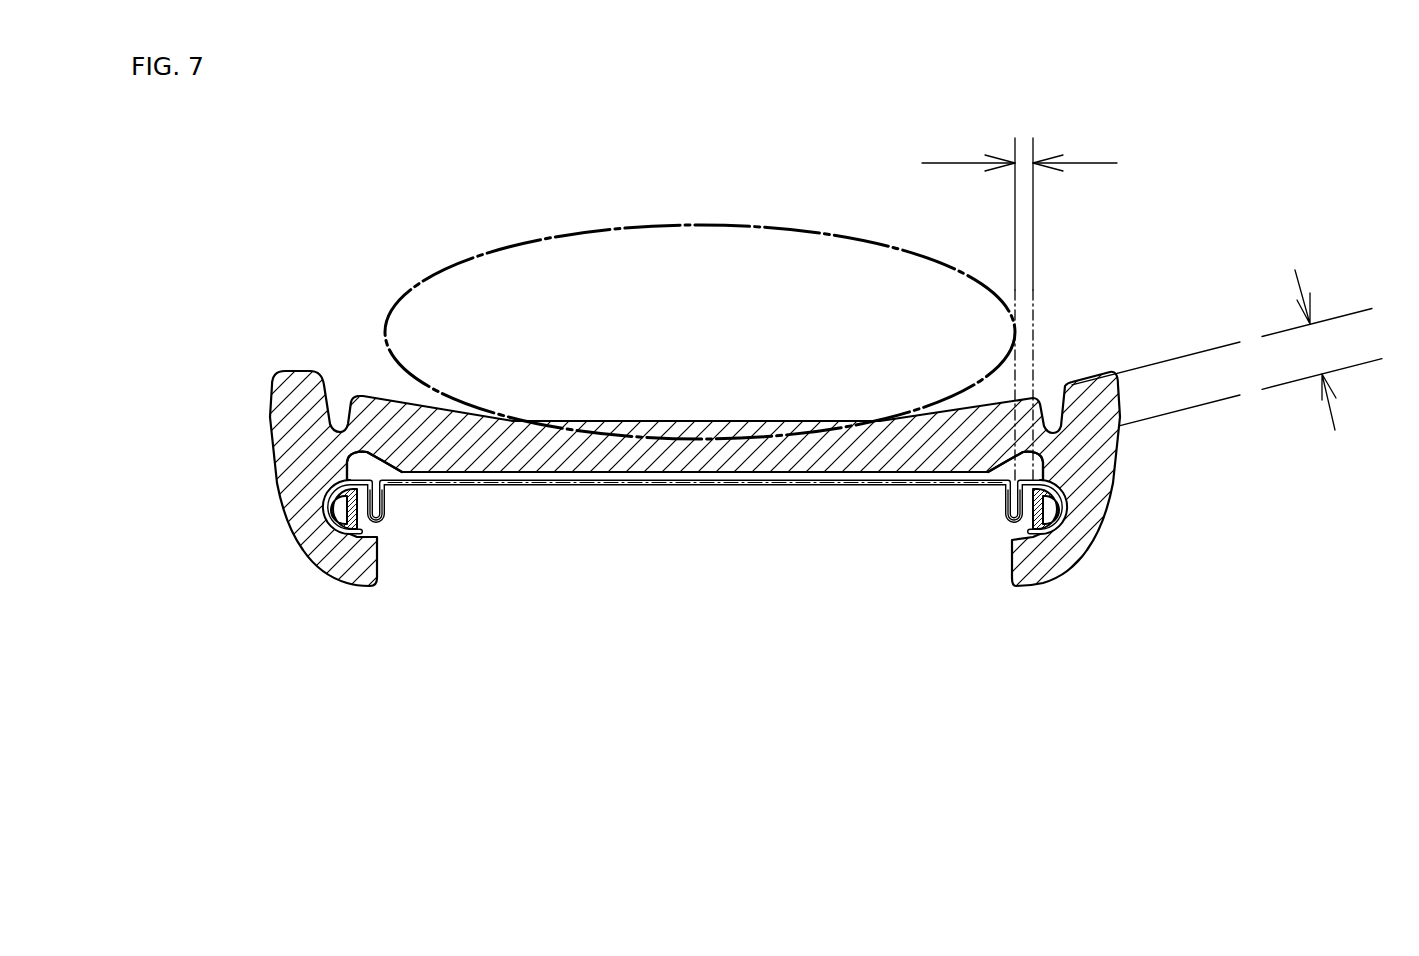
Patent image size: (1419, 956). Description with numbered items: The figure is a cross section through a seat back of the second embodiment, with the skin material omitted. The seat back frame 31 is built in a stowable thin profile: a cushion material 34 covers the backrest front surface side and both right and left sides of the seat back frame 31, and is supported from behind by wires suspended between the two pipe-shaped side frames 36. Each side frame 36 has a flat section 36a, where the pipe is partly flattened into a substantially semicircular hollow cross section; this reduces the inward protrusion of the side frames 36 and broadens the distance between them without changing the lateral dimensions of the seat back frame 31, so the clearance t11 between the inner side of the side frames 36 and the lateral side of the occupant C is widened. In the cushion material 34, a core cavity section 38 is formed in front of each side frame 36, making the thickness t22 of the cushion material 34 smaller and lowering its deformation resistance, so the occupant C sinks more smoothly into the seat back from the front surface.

The cushion material 34 is at (1080, 380).
The core cavity section 38 is at (337, 463).
The seat back frame 31 is at (715, 489).
The side frame 36 is at (323, 498).
The flat section 36a is at (372, 523).
The occupant C is at (735, 225).
The clearance t11 is at (1019, 288).
The thickness of the cushion material t22 is at (1227, 338).